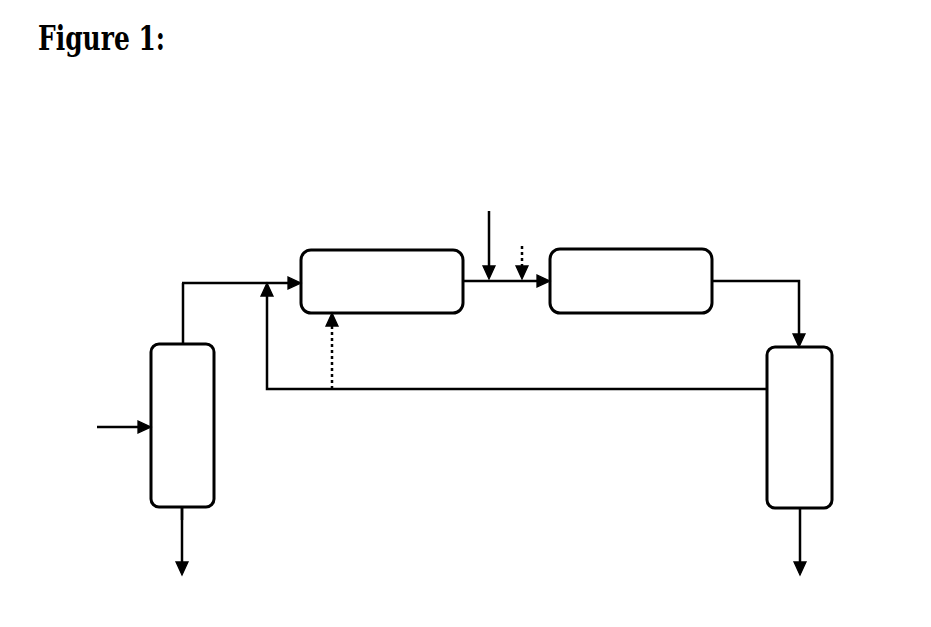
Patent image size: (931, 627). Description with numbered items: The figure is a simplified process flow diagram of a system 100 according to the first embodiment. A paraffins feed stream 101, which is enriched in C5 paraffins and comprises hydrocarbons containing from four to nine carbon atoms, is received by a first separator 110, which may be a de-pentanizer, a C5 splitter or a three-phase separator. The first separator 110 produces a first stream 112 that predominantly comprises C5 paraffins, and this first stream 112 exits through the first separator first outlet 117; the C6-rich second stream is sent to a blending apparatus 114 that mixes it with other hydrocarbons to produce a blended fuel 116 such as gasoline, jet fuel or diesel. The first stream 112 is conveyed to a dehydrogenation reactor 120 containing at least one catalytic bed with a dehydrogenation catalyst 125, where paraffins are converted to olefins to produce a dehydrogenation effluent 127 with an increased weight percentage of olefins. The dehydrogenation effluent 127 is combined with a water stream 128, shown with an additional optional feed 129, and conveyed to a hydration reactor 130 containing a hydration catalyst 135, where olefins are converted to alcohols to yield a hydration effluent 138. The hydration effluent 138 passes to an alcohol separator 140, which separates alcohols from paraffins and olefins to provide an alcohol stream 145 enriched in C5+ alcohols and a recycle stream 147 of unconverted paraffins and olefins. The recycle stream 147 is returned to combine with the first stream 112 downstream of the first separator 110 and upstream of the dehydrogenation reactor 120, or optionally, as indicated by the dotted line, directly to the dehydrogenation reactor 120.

The system 100 is at (141, 184).
The paraffins feed stream 101 is at (104, 427).
The first separator 110 is at (150, 359).
The first stream 112 is at (193, 276).
The blending apparatus 114 is at (184, 557).
The blended fuel 116 is at (190, 337).
The first separator first outlet 117 is at (188, 509).
The dehydrogenation reactor 120 is at (390, 248).
The dehydrogenation catalyst 125 is at (373, 280).
The dehydrogenation effluent 127 is at (482, 287).
The water stream 128 is at (490, 233).
The optional added stream 129 is at (523, 249).
The hydration reactor 130 is at (641, 248).
The hydration catalyst 135 is at (625, 280).
The hydration effluent 138 is at (790, 278).
The alcohol separator 140 is at (766, 451).
The alcohol stream 145 is at (802, 557).
The recycle stream 147 is at (548, 388).